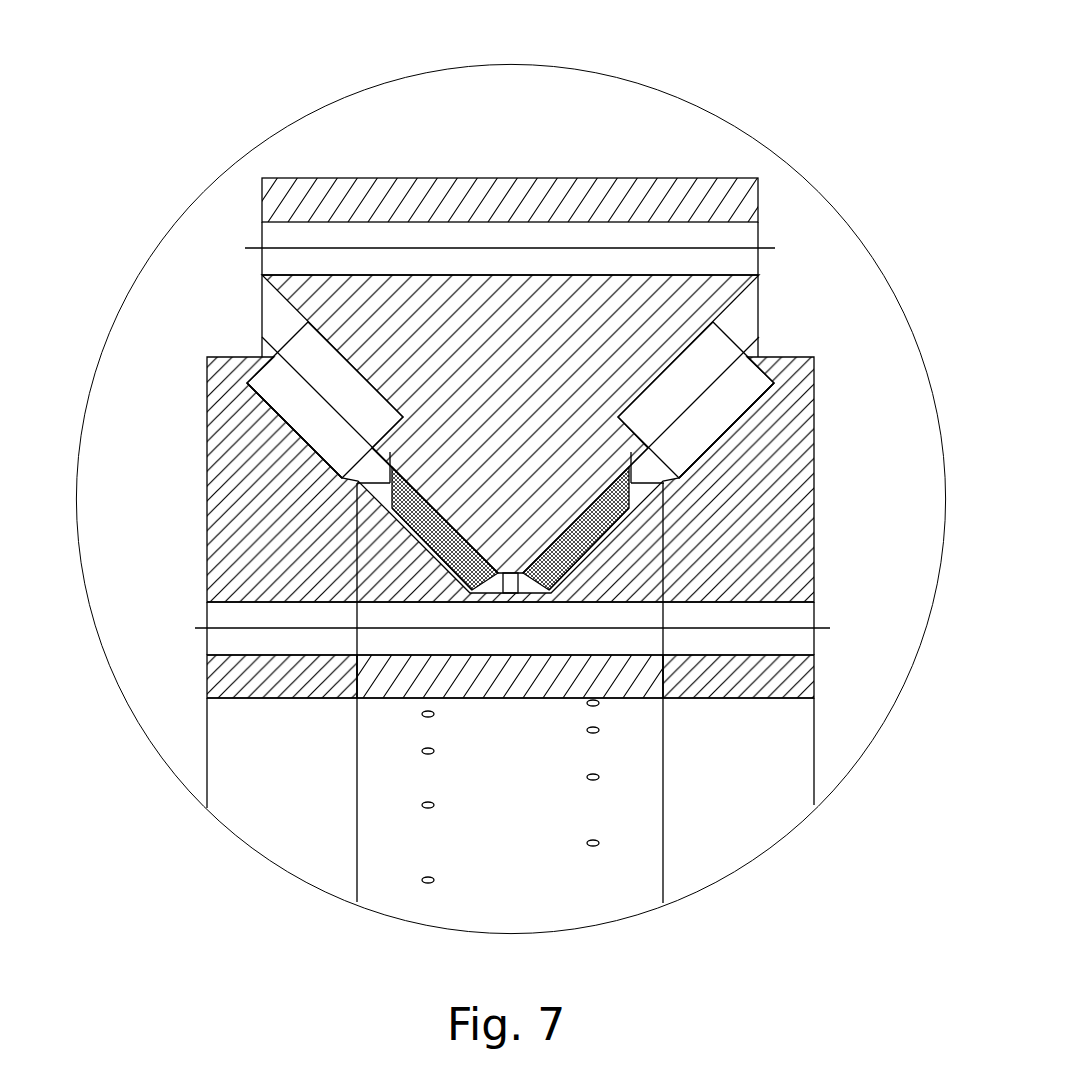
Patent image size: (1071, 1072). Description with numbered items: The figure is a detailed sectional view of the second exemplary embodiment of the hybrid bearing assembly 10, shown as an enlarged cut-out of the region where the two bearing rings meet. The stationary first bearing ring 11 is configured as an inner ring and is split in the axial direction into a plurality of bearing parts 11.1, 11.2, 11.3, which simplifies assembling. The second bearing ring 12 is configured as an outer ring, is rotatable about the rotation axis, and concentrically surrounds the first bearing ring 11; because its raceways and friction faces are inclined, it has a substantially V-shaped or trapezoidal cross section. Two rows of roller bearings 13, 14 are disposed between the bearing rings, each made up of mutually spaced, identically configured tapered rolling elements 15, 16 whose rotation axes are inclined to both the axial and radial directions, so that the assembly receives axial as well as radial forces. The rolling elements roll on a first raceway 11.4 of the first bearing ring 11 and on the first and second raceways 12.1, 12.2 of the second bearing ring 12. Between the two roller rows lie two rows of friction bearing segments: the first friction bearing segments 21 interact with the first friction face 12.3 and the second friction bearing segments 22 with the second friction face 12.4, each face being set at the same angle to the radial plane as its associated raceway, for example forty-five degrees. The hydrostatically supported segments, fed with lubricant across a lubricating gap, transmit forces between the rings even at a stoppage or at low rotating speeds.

The bearing assembly 10 is at (766, 99).
The first bearing ring 11 is at (815, 383).
The bearing part 11.1 is at (263, 678).
The bearing part 11.2 is at (565, 690).
The bearing part 11.3 is at (302, 440).
The first raceway 11.4 is at (678, 458).
The second bearing ring 12 is at (735, 300).
The first raceway 12.1 is at (666, 394).
The second raceway 12.2 is at (332, 368).
The first friction face 12.3 is at (597, 514).
The second friction face 12.4 is at (427, 507).
The row of roller bearings 13 is at (682, 505).
The row of roller bearings 14 is at (338, 494).
The rolling element 15 is at (723, 425).
The rolling element 16 is at (318, 438).
The first friction bearing segment 21 is at (577, 565).
The second friction bearing segment 22 is at (450, 557).